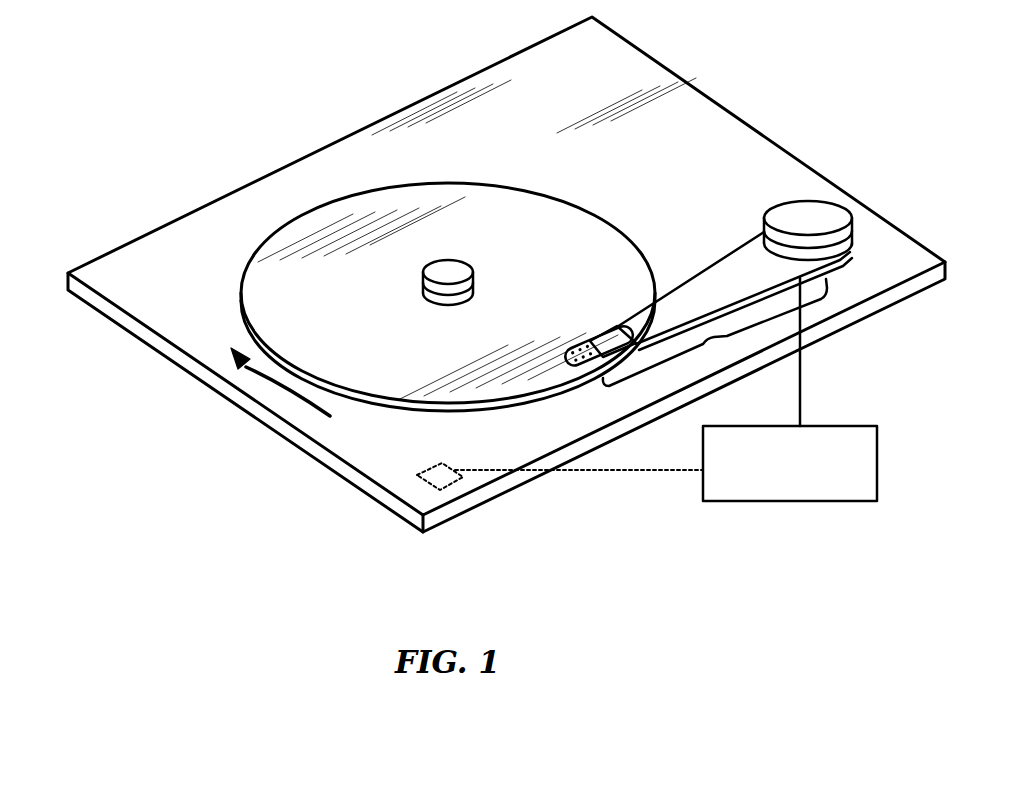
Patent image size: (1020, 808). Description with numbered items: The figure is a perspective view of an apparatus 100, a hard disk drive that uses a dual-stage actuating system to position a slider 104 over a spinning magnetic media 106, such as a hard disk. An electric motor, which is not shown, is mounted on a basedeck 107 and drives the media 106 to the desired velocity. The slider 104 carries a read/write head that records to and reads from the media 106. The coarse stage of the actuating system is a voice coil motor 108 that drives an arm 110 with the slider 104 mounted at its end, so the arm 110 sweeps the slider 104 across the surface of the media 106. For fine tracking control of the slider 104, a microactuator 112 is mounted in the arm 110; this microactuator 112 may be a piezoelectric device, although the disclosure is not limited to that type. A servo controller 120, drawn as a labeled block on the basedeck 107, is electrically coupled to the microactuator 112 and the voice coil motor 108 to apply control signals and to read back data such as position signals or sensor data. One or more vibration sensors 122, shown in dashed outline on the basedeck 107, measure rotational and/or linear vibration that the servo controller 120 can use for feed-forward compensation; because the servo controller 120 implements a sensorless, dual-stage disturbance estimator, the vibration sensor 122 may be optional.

The apparatus 100 is at (193, 157).
The slider 104 is at (585, 345).
The magnetic media 106 is at (498, 200).
The basedeck 107 is at (358, 475).
The voice coil motor 108 is at (813, 218).
The arm 110 is at (716, 340).
The microactuator 112 is at (612, 330).
The servo controller 120 is at (743, 496).
The vibration sensor 122 is at (453, 482).